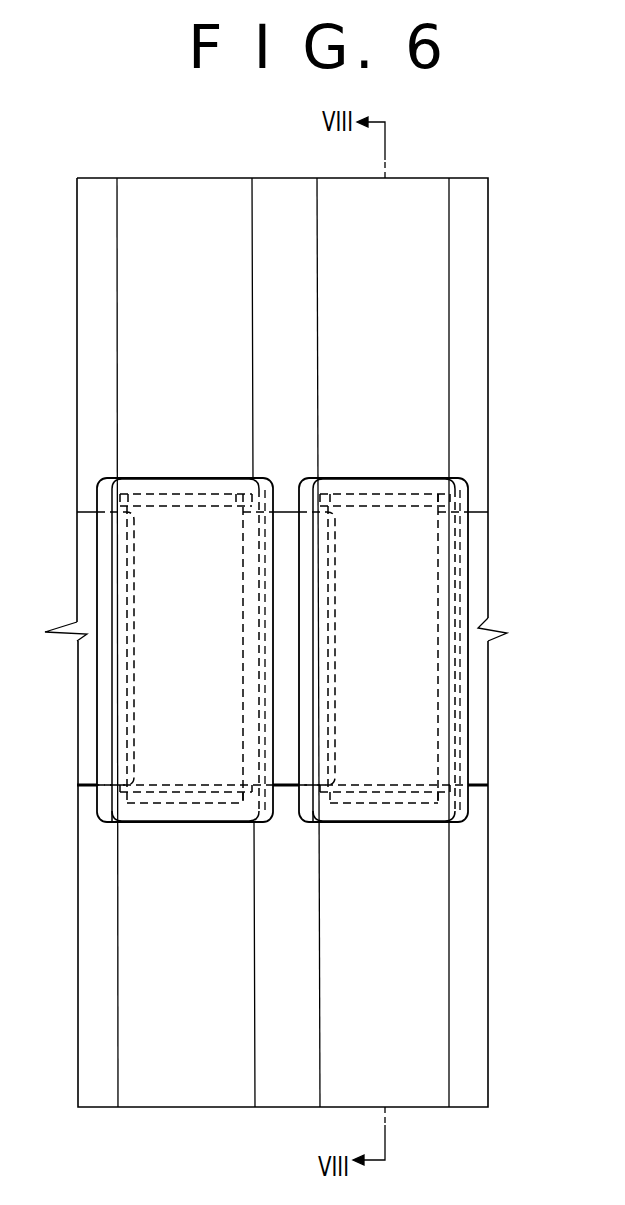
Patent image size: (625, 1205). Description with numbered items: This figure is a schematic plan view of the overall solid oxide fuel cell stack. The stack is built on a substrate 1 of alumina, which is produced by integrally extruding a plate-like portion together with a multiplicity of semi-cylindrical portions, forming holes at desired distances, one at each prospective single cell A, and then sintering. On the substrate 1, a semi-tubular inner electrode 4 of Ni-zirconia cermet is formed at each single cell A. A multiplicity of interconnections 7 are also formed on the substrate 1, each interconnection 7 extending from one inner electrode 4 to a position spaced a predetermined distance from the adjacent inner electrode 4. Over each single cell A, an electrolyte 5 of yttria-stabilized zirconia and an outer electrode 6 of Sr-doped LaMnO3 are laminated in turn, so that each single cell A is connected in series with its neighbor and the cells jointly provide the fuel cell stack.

The substrate 1 is at (432, 423).
The inner electrode 4 is at (417, 552).
The electrolyte 5 is at (100, 481).
The outer electrode 6 is at (153, 535).
The interconnection 7 is at (478, 594).
The single cell A is at (473, 795).